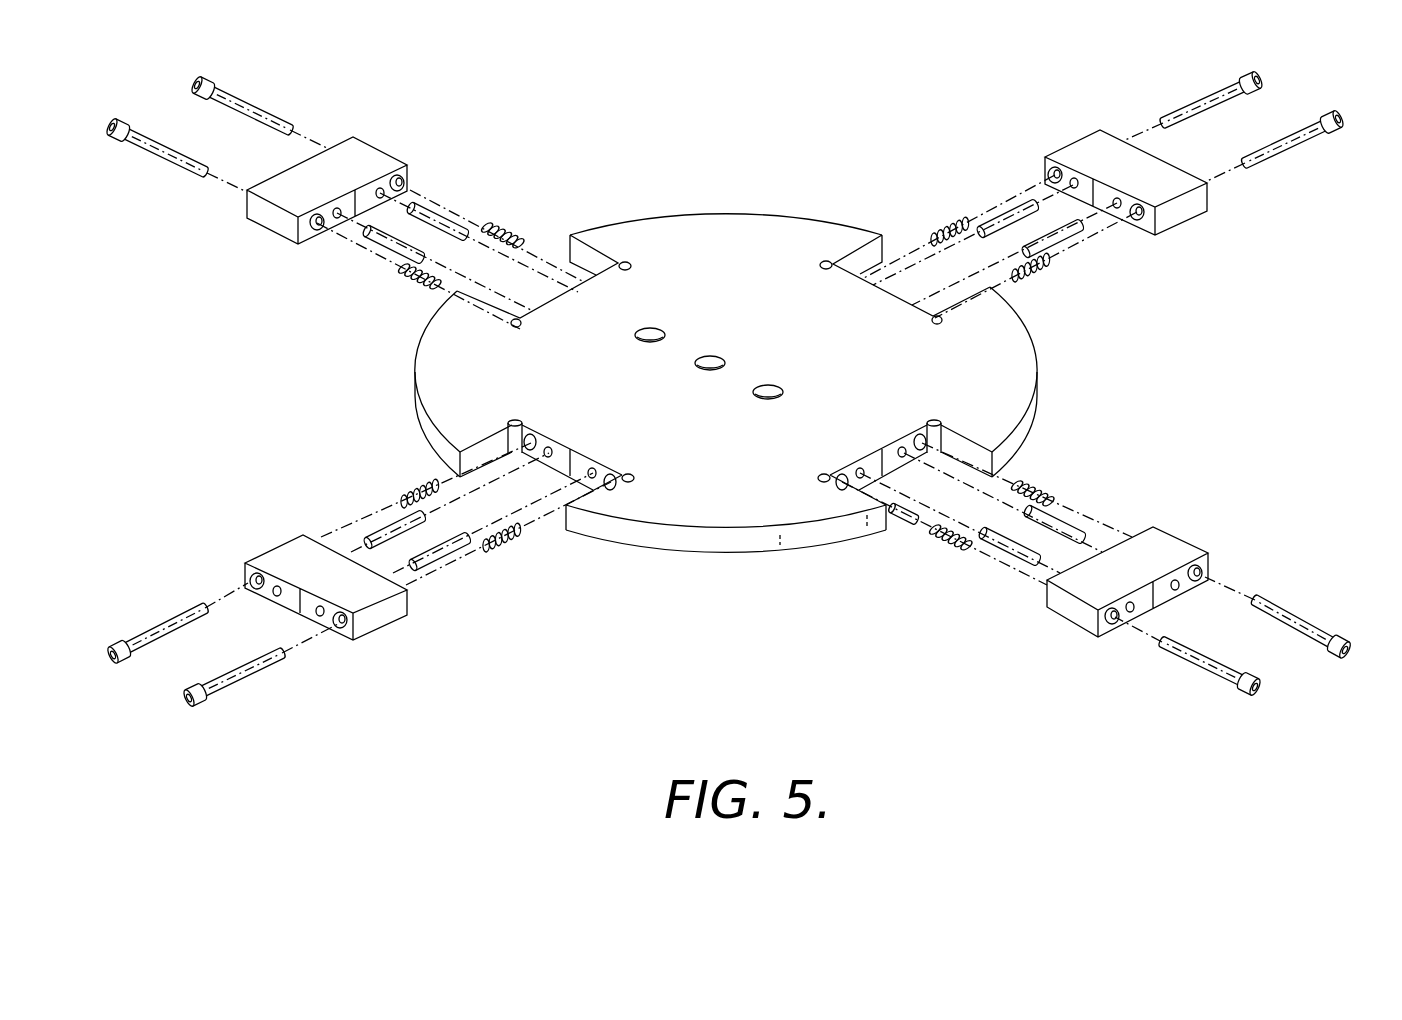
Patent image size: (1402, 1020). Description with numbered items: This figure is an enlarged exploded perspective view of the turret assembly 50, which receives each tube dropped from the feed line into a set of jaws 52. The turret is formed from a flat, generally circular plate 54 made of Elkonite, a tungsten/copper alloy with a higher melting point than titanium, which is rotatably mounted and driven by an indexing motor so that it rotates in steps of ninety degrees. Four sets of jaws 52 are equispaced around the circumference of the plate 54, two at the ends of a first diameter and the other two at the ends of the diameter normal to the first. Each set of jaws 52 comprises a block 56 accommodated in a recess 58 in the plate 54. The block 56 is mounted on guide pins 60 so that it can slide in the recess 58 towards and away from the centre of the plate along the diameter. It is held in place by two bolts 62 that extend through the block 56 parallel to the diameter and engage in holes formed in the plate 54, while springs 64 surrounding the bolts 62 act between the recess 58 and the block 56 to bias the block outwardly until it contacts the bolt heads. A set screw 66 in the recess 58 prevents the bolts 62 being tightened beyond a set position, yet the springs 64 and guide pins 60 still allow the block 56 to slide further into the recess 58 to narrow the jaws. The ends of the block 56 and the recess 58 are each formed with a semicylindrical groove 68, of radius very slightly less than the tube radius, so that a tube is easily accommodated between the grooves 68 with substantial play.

The turret assembly 50 is at (1237, 336).
The set of jaws 52 is at (218, 55).
The plate 54 is at (757, 547).
The block 56 is at (1163, 543).
The recess 58 is at (535, 483).
The guide pins 60 is at (1000, 222).
The bolts 62 is at (1203, 97).
The springs 64 is at (947, 223).
The set screw 66 is at (903, 523).
The semicylindrical groove 68 is at (1093, 178).